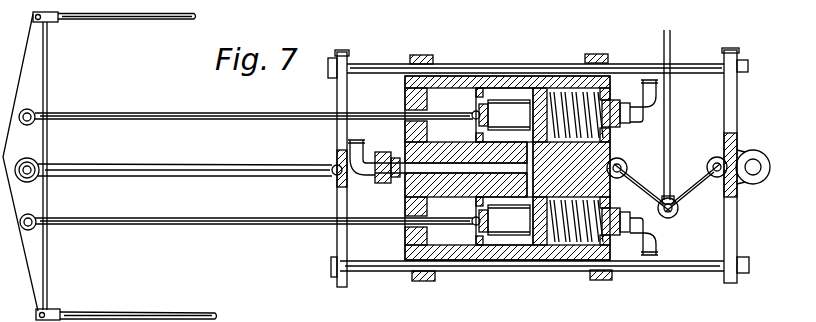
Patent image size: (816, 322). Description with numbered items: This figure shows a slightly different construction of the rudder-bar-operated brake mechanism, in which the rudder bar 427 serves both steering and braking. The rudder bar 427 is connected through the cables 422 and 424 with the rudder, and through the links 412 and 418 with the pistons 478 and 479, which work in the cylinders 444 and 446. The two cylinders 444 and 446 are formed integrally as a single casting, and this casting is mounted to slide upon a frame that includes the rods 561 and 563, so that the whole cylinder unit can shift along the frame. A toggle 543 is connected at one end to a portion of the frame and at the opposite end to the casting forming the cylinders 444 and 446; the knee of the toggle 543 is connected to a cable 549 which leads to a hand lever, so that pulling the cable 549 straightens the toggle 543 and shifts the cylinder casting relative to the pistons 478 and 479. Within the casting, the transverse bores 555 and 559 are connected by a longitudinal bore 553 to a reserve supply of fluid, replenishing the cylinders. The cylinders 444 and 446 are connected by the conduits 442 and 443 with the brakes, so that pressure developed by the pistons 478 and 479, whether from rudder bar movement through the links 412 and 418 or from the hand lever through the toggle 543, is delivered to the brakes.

The cable 422 is at (136, 20).
The rudder bar 427 is at (36, 80).
The link 418 is at (150, 113).
The link 412 is at (197, 220).
The cable 424 is at (152, 314).
The piston 479 is at (503, 112).
The transverse bore 555 is at (534, 125).
The cylinder 444 is at (560, 90).
The conduit 442 is at (645, 100).
The rod 561 is at (687, 64).
The cable 549 is at (670, 113).
The transverse bore 559 is at (611, 147).
The toggle 543 is at (700, 178).
The conduit 443 is at (660, 236).
The longitudinal bore 553 is at (410, 170).
The piston 478 is at (500, 232).
The cylinder 446 is at (567, 257).
The rod 563 is at (679, 263).